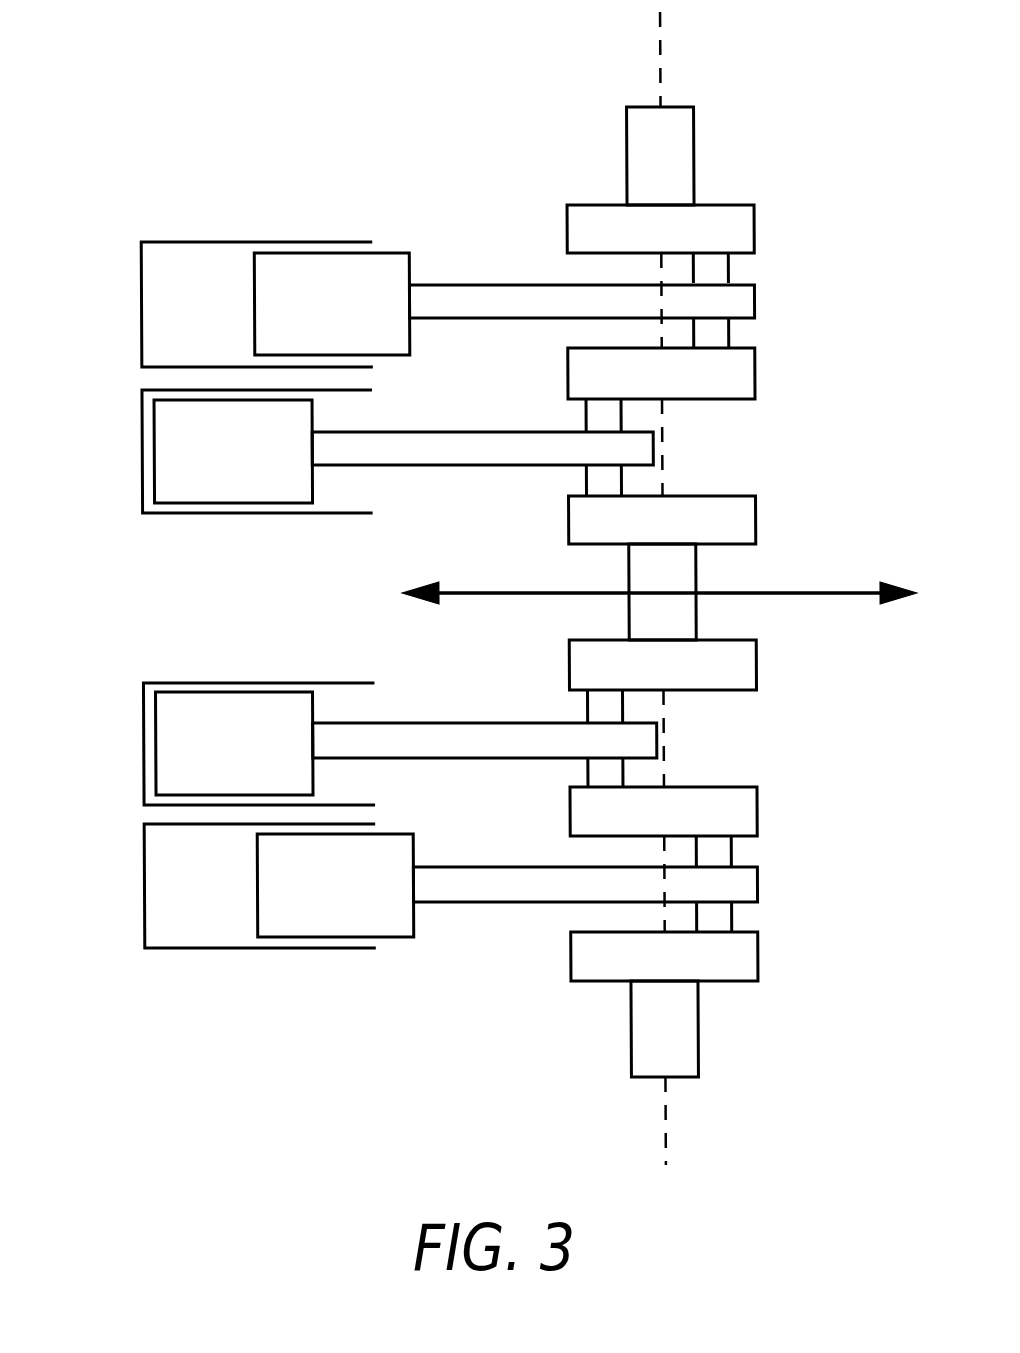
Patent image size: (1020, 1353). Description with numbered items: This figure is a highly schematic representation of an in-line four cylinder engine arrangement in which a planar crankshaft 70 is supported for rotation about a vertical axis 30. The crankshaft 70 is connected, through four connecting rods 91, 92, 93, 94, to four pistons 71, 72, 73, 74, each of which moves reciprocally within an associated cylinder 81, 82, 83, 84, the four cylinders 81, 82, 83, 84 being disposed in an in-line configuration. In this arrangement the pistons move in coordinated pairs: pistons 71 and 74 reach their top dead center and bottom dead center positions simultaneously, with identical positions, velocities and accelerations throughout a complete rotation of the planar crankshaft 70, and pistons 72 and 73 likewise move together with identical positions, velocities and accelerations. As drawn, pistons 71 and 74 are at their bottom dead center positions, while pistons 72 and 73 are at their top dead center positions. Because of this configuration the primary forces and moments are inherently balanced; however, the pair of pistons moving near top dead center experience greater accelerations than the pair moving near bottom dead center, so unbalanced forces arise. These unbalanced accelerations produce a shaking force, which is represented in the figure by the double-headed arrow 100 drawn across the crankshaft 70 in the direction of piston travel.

The vertical axis 30 is at (661, 40).
The planar crankshaft 70 is at (727, 213).
The piston 71 is at (347, 325).
The piston 72 is at (248, 473).
The piston 73 is at (250, 766).
The piston 74 is at (352, 907).
The cylinder 81 is at (155, 302).
The cylinder 82 is at (150, 458).
The cylinder 83 is at (150, 745).
The cylinder 84 is at (158, 890).
The connecting rod 91 is at (466, 297).
The connecting rod 92 is at (473, 443).
The connecting rod 93 is at (462, 735).
The connecting rod 94 is at (474, 878).
The arrow 100 is at (476, 590).